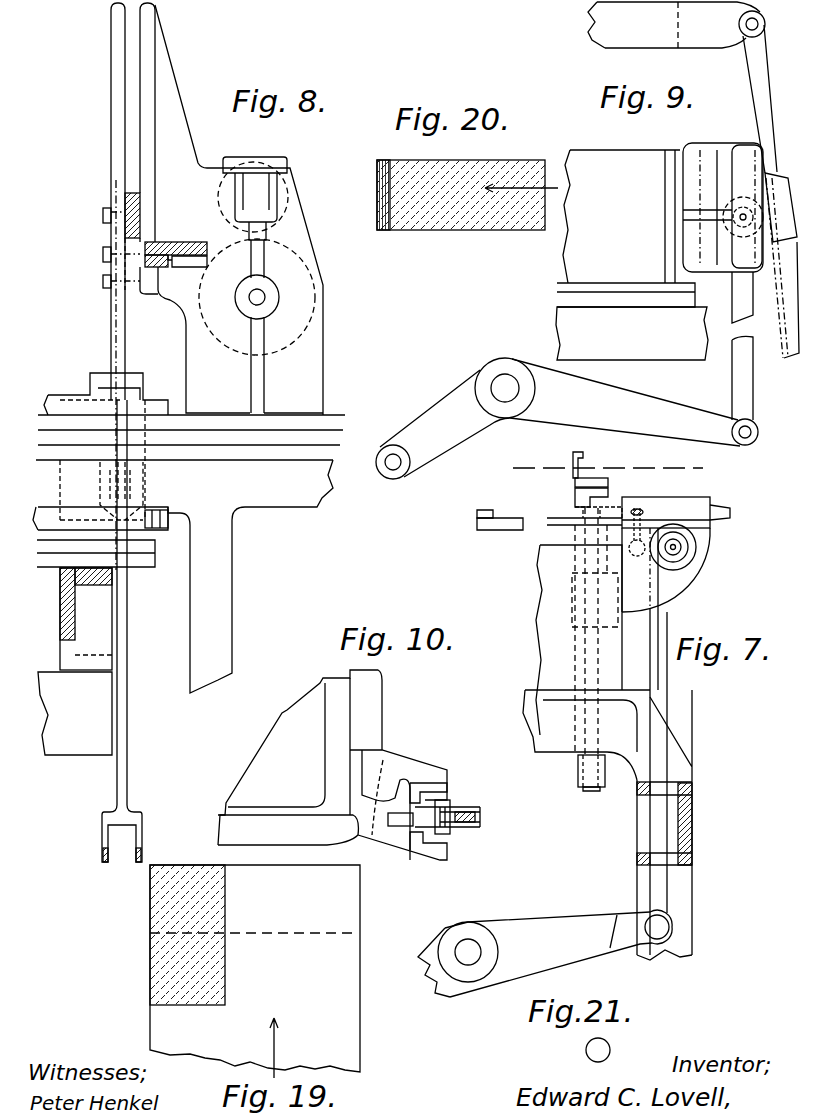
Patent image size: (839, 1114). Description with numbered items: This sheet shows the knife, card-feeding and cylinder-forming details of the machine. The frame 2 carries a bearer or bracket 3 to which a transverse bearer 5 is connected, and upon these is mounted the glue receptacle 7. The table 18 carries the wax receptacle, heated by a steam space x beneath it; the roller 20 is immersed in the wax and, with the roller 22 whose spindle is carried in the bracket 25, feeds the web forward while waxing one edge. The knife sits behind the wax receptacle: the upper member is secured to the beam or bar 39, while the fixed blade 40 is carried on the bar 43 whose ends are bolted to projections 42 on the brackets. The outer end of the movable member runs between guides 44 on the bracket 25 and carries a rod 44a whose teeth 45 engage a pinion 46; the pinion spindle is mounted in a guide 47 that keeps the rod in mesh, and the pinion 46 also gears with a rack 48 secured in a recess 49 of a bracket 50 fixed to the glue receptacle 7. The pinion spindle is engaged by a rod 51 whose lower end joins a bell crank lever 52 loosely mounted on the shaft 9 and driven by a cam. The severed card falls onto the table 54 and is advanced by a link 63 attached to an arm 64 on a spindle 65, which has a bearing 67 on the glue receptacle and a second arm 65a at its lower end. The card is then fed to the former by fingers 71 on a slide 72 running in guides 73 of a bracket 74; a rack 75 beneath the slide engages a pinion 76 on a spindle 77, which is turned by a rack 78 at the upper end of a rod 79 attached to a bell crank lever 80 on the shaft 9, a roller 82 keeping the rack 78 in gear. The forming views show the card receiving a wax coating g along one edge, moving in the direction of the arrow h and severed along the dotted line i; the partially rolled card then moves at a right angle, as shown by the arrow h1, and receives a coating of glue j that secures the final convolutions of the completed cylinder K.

In FIG. 8, the frame 2 is at (200, 600).
In FIG. 7, the bearer or bracket 3 is at (694, 826).
In FIG. 8, the transverse bearer or bracket 5 is at (75, 661).
In FIG. 9, the transverse bearer or bracket 5 is at (632, 333).
In FIG. 8, the glue receptacle 7 is at (100, 537).
In FIG. 9, the glue receptacle 7 is at (621, 216).
In FIG. 7, the glue receptacle 7 is at (586, 644).
In FIG. 10, the glue receptacle 7 is at (300, 757).
In FIG. 9, the shaft 9 is at (500, 384).
In FIG. 7, the shaft 9 is at (470, 945).
In FIG. 8, the table 18 is at (338, 430).
In FIG. 8, the roller 20 is at (302, 326).
In FIG. 8, the roller 22 is at (290, 173).
In FIG. 8, the bracket 25 is at (300, 228).
In FIG. 8, the beam or bar 39 is at (125, 208).
In FIG. 9, the beam or bar 39 is at (674, 25).
In FIG. 8, the fixed blade 40 is at (157, 246).
In FIG. 8, the projection 42 is at (186, 261).
In FIG. 8, the bar 43 is at (190, 242).
In FIG. 8, the guides 44 is at (113, 81).
In FIG. 9, the rod 44a is at (782, 82).
In FIG. 10, the rod 44a is at (480, 822).
In FIG. 9, the teeth 45 is at (788, 359).
In FIG. 8, the pinion 46 is at (135, 490).
In FIG. 9, the pinion 46 is at (760, 192).
In FIG. 10, the pinion 46 is at (445, 825).
In FIG. 9, the guide 47 is at (784, 244).
In FIG. 10, the guide 47 is at (478, 808).
In FIG. 9, the rack 48 is at (640, 295).
In FIG. 10, the rack 48 is at (400, 826).
In FIG. 10, the recess 49 is at (395, 830).
In FIG. 8, the bracket 50 is at (75, 492).
In FIG. 9, the bracket 50 is at (723, 207).
In FIG. 10, the bracket 50 is at (398, 792).
In FIG. 8, the rod 51 is at (127, 631).
In FIG. 9, the rod 51 is at (753, 407).
In FIG. 9, the bell crank lever 52 is at (567, 418).
In FIG. 7, the table 54 is at (608, 460).
In FIG. 7, the link 63 is at (494, 511).
In FIG. 7, the arm 64 is at (503, 530).
In FIG. 7, the spindle 65 is at (590, 553).
In FIG. 7, the second arm 65a is at (582, 770).
In FIG. 7, the bearing 67 is at (575, 592).
In FIG. 7, the fingers 71 is at (580, 474).
In FIG. 7, the slide 72 is at (612, 490).
In FIG. 7, the guides 73 is at (666, 512).
In FIG. 7, the bracket 74 is at (672, 580).
In FIG. 7, the rack 75 is at (726, 520).
In FIG. 7, the pinion 76 is at (696, 556).
In FIG. 7, the spindle 77 is at (688, 550).
In FIG. 7, the rack 78 is at (648, 612).
In FIG. 7, the rod 79 is at (667, 690).
In FIG. 7, the bell crank lever 80 is at (545, 953).
In FIG. 7, the roller 82 is at (639, 557).
In FIG. 20, the wax coating g is at (423, 231).
In FIG. 19, the wax coating g is at (163, 968).
In FIG. 19, the arrow h is at (286, 1048).
In FIG. 20, the arrow h1 is at (554, 186).
In FIG. 19, the line of severance i is at (340, 933).
In FIG. 20, the coating of glue j is at (533, 231).
In FIG. 9, the steam jacket or space x is at (565, 262).
In FIG. 21, the cylinder K is at (609, 1050).